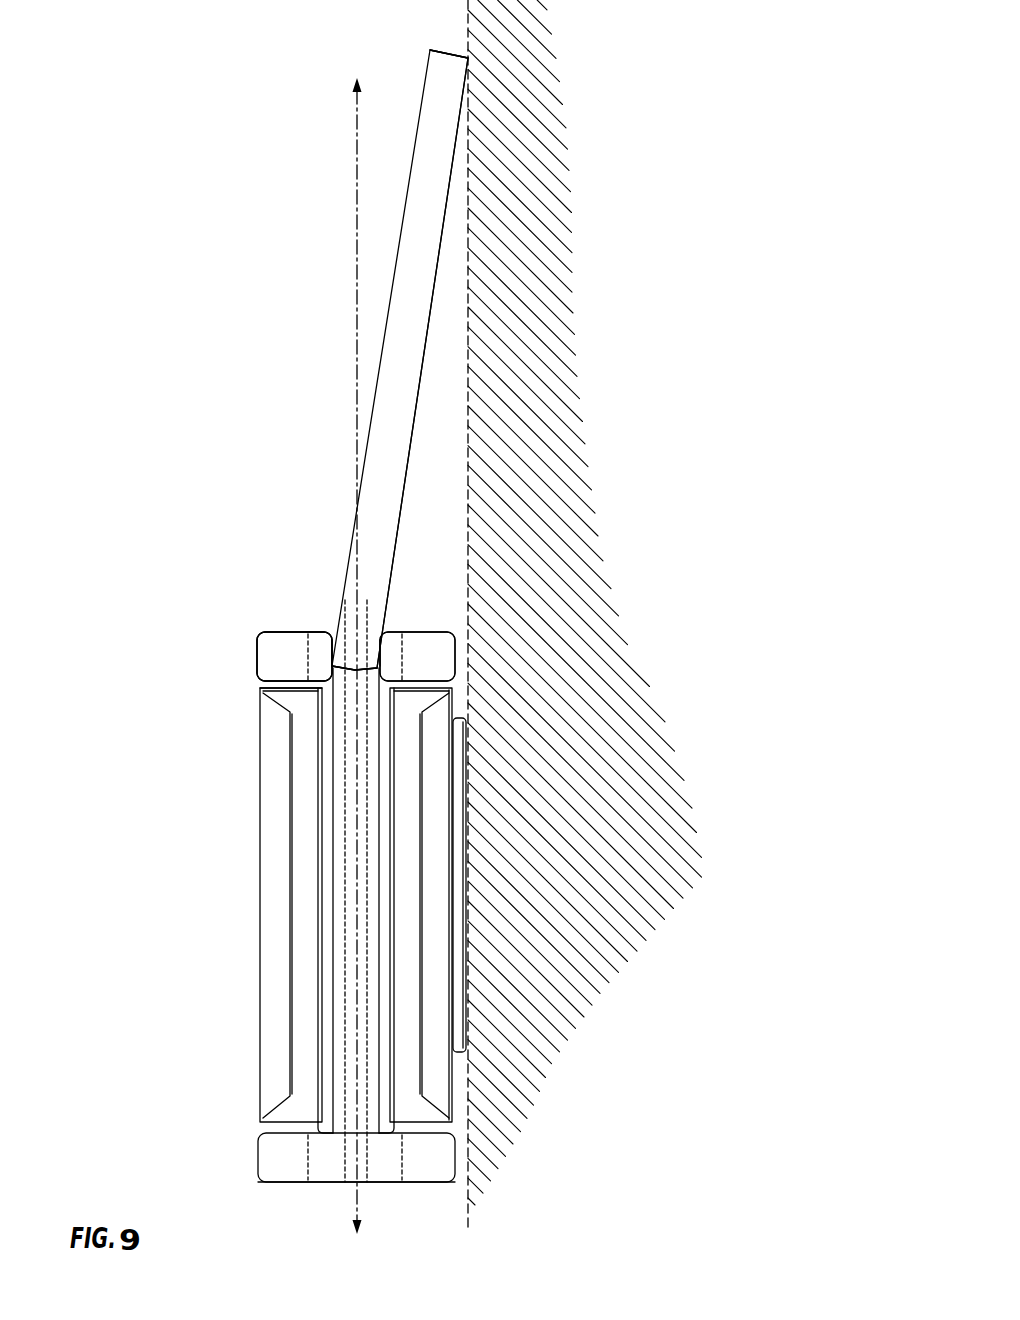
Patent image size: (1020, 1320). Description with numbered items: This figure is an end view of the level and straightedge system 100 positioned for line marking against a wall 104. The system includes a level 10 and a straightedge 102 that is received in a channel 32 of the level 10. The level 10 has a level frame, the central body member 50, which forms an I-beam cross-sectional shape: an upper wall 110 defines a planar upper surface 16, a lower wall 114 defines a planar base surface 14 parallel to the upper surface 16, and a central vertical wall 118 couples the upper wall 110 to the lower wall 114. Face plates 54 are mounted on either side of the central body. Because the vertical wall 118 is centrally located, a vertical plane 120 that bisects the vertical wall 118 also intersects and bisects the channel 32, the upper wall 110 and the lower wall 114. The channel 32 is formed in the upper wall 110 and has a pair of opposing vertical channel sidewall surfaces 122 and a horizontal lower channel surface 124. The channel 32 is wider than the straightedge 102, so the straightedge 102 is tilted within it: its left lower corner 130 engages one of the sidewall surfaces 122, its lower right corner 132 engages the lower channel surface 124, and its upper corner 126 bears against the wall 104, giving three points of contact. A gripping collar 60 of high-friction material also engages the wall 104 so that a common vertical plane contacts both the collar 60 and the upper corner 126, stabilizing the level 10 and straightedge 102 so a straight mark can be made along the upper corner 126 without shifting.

The level 10 is at (95, 706).
The base surface 14 is at (295, 1186).
The upper surface 16 is at (280, 631).
The channel 32 is at (386, 630).
The central body member 50 is at (215, 633).
The face plates 54 is at (310, 1049).
The gripping collar 60 is at (458, 1018).
The level and straightedge system 100 is at (225, 160).
The straightedge 102 is at (435, 76).
The wall 104 is at (468, 24).
The upper wall 110 is at (272, 656).
The lower wall 114 is at (272, 1148).
The central vertical wall 118 is at (350, 890).
The vertical plane 120 is at (357, 166).
The channel sidewall surfaces 122 is at (332, 651).
The lower channel surface 124 is at (340, 675).
The upper corner 126 is at (468, 58).
The left lower corner 130 is at (331, 667).
The lower right corner 132 is at (373, 673).